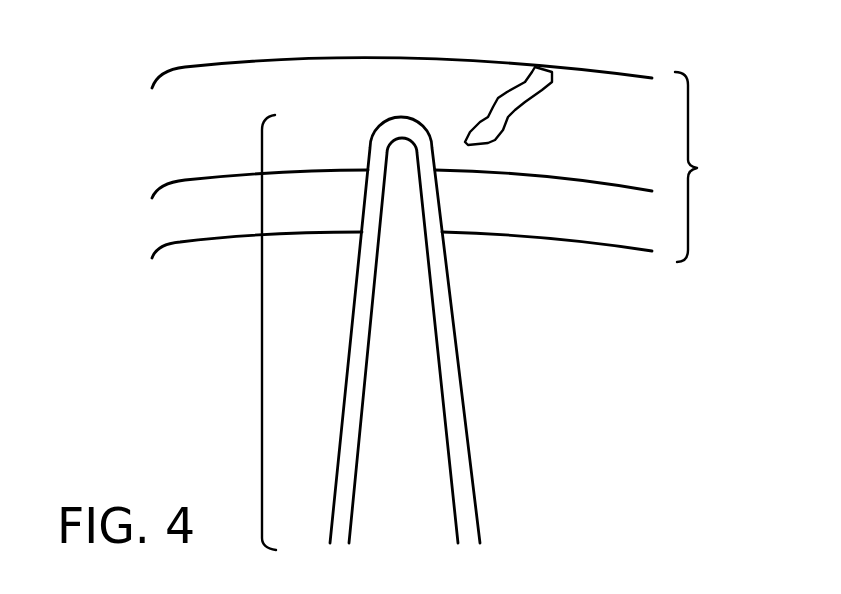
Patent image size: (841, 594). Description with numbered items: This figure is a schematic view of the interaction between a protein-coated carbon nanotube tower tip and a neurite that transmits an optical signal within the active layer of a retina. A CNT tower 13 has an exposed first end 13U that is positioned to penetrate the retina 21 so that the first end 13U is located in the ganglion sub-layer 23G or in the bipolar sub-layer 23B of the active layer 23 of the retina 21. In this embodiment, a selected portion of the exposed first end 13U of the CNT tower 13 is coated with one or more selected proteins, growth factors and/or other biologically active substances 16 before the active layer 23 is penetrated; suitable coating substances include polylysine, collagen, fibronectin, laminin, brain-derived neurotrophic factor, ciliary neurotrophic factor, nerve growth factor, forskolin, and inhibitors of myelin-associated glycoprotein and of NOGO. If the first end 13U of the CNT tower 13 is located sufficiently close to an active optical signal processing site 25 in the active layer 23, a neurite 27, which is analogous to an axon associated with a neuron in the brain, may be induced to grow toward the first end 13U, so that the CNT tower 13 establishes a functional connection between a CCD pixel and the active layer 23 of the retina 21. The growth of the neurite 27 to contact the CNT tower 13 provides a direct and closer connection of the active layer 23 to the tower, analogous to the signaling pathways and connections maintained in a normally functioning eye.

The CNT tower 13 is at (417, 500).
The first end of CNT tower 13U is at (262, 320).
The biologically active substances 16 is at (450, 360).
The retina 21 is at (718, 167).
The active layer 23 is at (686, 167).
The bipolar sub-layer 23B is at (240, 220).
The ganglion sub-layer 23G is at (167, 95).
The active optical signal processing site 25 is at (402, 111).
The neurite 27 is at (497, 140).